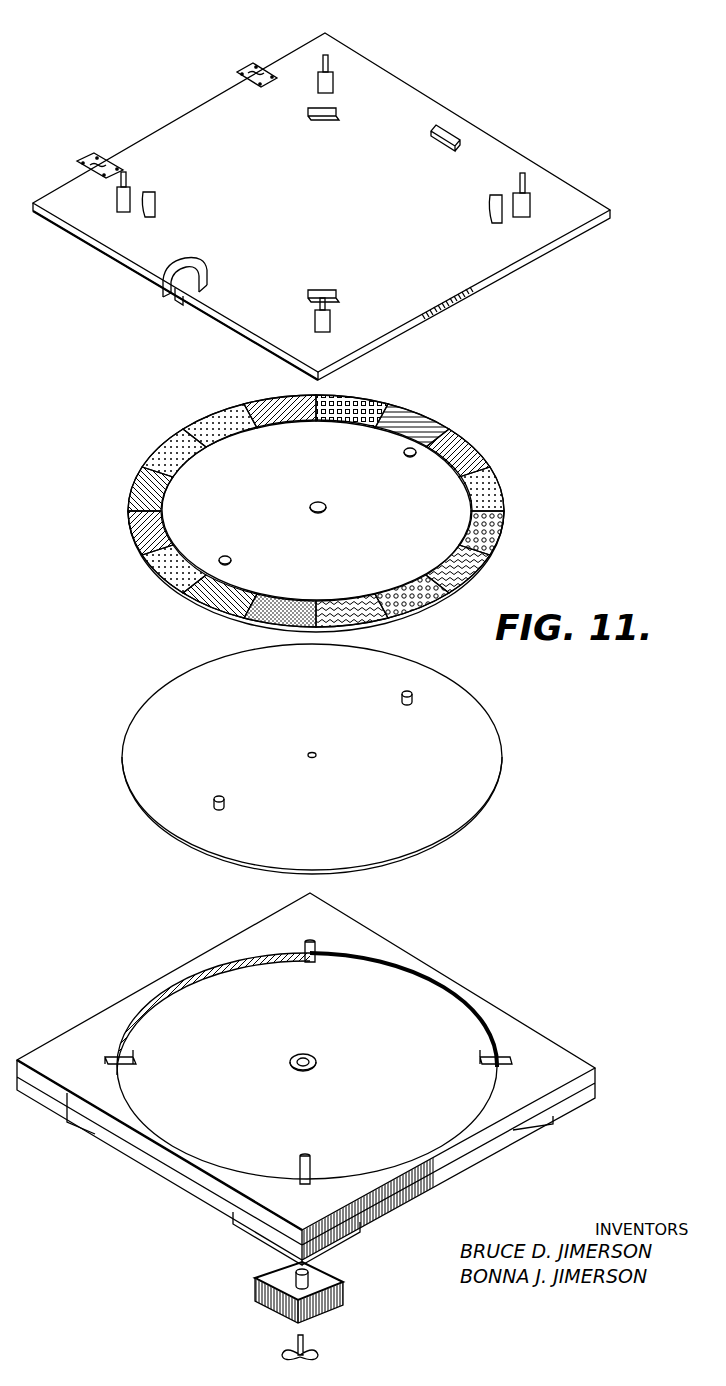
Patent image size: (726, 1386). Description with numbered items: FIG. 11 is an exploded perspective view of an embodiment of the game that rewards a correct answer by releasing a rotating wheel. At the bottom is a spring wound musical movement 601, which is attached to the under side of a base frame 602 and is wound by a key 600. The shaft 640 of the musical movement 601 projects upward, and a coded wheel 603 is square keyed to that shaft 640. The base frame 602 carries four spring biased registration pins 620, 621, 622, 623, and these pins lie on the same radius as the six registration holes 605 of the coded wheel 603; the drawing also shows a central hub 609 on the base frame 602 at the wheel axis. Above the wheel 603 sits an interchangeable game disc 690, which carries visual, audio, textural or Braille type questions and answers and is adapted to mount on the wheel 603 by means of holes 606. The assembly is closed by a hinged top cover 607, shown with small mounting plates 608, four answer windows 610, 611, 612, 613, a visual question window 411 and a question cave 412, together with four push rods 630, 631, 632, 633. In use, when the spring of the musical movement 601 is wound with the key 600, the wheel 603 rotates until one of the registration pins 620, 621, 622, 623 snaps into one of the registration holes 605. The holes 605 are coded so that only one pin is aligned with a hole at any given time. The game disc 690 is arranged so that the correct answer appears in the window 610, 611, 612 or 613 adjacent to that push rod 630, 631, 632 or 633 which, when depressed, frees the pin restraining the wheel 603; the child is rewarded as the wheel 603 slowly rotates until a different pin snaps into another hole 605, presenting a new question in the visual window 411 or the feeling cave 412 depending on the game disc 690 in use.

The hinged top cover 607 is at (473, 293).
The mounting plate 608 is at (240, 70).
The push rod 633 is at (327, 63).
The answer window 613 is at (322, 113).
The visual question window 411 is at (457, 137).
The push rod 630 is at (523, 177).
The answer window 610 is at (490, 213).
The push rod 632 is at (130, 177).
The answer window 612 is at (153, 203).
The question cave 412 is at (177, 293).
The answer window 611 is at (330, 292).
The push rod 631 is at (328, 315).
The game disc 690 is at (505, 517).
The holes 606 is at (404, 452).
The coded wheel 603 is at (493, 793).
The registration holes 605 is at (170, 697).
The base frame 602 is at (553, 1040).
The registration pin 620 is at (135, 1057).
The registration pin 621 is at (315, 943).
The registration pin 623 is at (480, 1058).
The registration pin 622 is at (310, 1157).
The hub 609 is at (320, 1062).
The spring wound musical movement 601 is at (325, 1307).
The shaft 640 is at (308, 1278).
The key 600 is at (318, 1355).